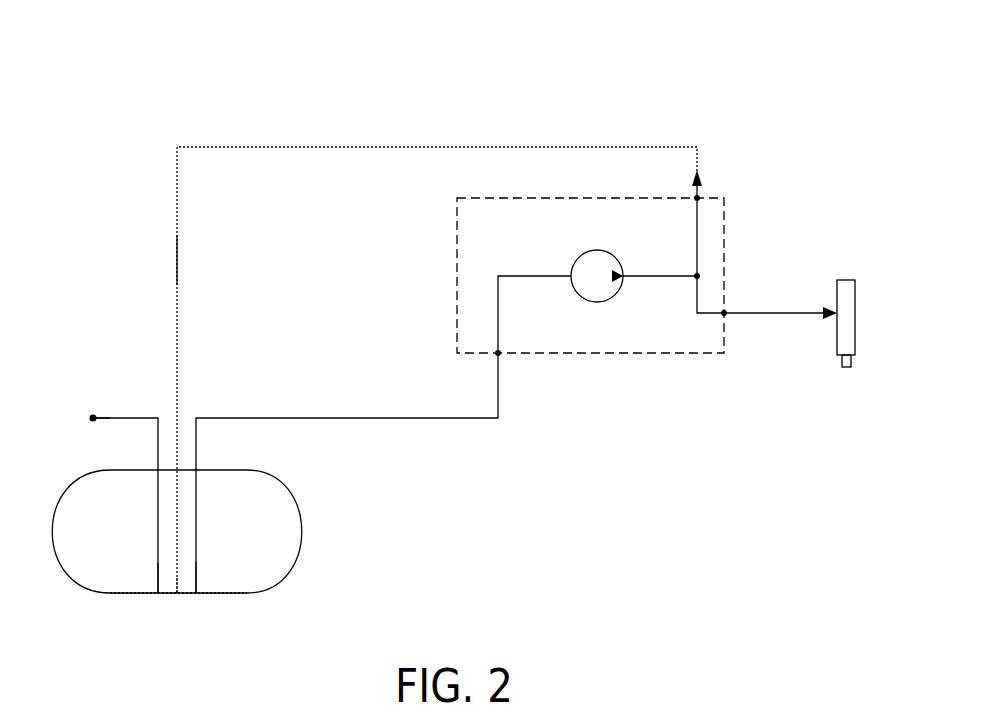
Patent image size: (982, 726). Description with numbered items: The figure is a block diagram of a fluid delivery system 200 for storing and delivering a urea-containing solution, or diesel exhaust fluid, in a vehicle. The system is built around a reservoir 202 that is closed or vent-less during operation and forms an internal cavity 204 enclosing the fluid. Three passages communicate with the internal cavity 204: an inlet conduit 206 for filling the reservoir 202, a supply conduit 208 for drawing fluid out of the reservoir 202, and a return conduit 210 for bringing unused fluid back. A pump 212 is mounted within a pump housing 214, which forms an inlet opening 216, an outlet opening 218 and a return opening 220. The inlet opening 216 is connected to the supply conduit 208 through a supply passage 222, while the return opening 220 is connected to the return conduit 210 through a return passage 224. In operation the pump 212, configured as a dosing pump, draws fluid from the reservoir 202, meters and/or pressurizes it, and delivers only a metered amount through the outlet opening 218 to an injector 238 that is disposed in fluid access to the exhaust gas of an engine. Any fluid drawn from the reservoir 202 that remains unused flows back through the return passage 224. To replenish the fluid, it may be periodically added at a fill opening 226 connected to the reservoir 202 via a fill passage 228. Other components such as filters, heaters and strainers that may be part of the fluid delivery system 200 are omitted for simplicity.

The fluid delivery system 200 is at (630, 113).
The reservoir 202 is at (300, 515).
The internal cavity 204 is at (275, 552).
The inlet conduit 206 is at (160, 563).
The supply conduit 208 is at (197, 562).
The return conduit 210 is at (192, 578).
The pump 212 is at (607, 253).
The pump housing 214 is at (655, 355).
The inlet opening 216 is at (500, 351).
The outlet opening 218 is at (726, 310).
The return opening 220 is at (699, 196).
The supply passage 222 is at (455, 420).
The return passage 224 is at (374, 146).
The fill opening 226 is at (95, 415).
The fill passage 228 is at (138, 415).
The injector 238 is at (835, 330).